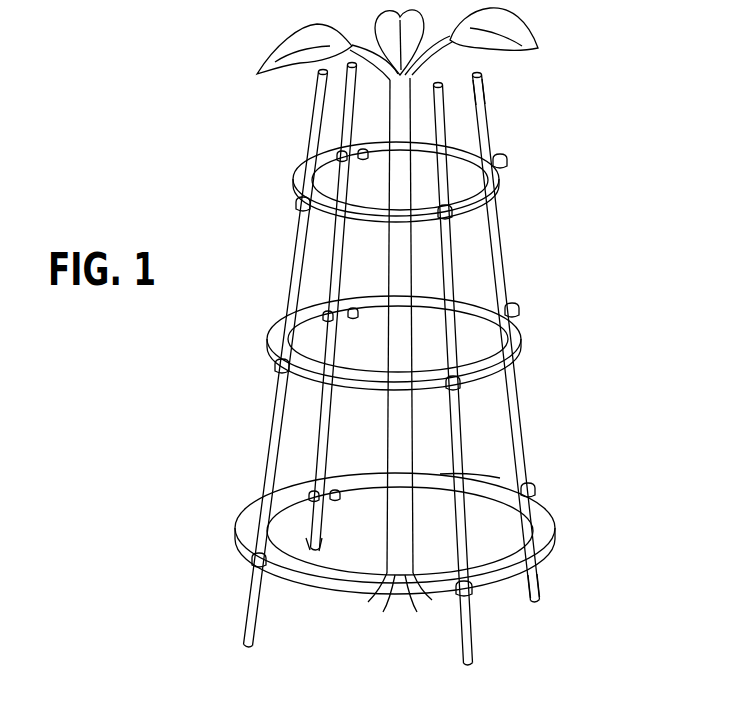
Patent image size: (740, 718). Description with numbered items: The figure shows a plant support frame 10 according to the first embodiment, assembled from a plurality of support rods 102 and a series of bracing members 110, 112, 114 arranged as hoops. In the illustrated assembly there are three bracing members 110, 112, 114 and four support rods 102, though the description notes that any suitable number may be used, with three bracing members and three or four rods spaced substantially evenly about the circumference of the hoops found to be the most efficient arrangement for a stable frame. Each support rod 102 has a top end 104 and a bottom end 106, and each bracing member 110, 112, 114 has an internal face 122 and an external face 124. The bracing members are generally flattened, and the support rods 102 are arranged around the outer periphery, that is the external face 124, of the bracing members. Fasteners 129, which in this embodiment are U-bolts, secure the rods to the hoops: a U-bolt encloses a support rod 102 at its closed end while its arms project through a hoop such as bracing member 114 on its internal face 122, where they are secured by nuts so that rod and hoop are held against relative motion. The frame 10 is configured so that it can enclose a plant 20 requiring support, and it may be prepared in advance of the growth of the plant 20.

The plant support frame 10 is at (590, 118).
The plant 20 is at (537, 46).
The support rods 102 is at (458, 289).
The top end 104 is at (485, 68).
The bottom end 106 is at (540, 600).
The bracing member 110 is at (236, 540).
The bracing member 112 is at (266, 348).
The bracing member 114 is at (292, 183).
The internal face 122 is at (481, 486).
The external face 124 is at (318, 578).
The fasteners 129 is at (476, 600).